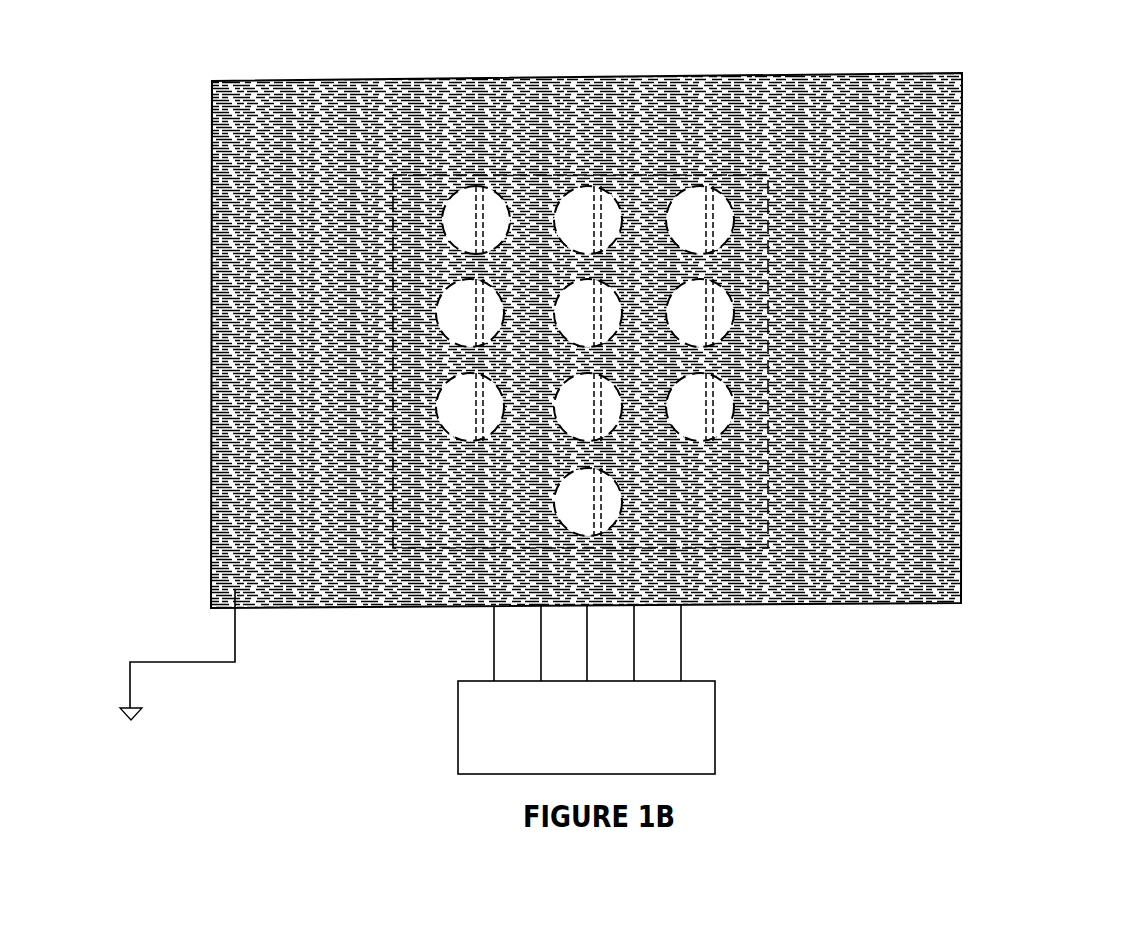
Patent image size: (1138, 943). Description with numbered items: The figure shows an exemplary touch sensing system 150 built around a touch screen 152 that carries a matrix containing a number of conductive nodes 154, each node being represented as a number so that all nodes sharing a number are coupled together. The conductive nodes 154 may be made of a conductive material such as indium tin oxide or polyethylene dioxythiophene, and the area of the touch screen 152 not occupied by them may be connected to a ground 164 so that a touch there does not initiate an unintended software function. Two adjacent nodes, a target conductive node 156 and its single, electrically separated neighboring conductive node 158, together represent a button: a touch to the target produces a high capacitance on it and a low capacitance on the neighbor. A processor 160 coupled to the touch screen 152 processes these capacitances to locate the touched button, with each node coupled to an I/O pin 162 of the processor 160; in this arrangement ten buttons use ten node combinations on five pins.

The touch sensing system 150 is at (835, 728).
The touch screen 152 is at (962, 314).
The conductive nodes 154 is at (768, 474).
The target conductive node 156 is at (452, 203).
The neighboring conductive node 158 is at (488, 193).
The processor 160 is at (586, 727).
The I/O pin 162 is at (494, 612).
The ground 164 is at (163, 674).